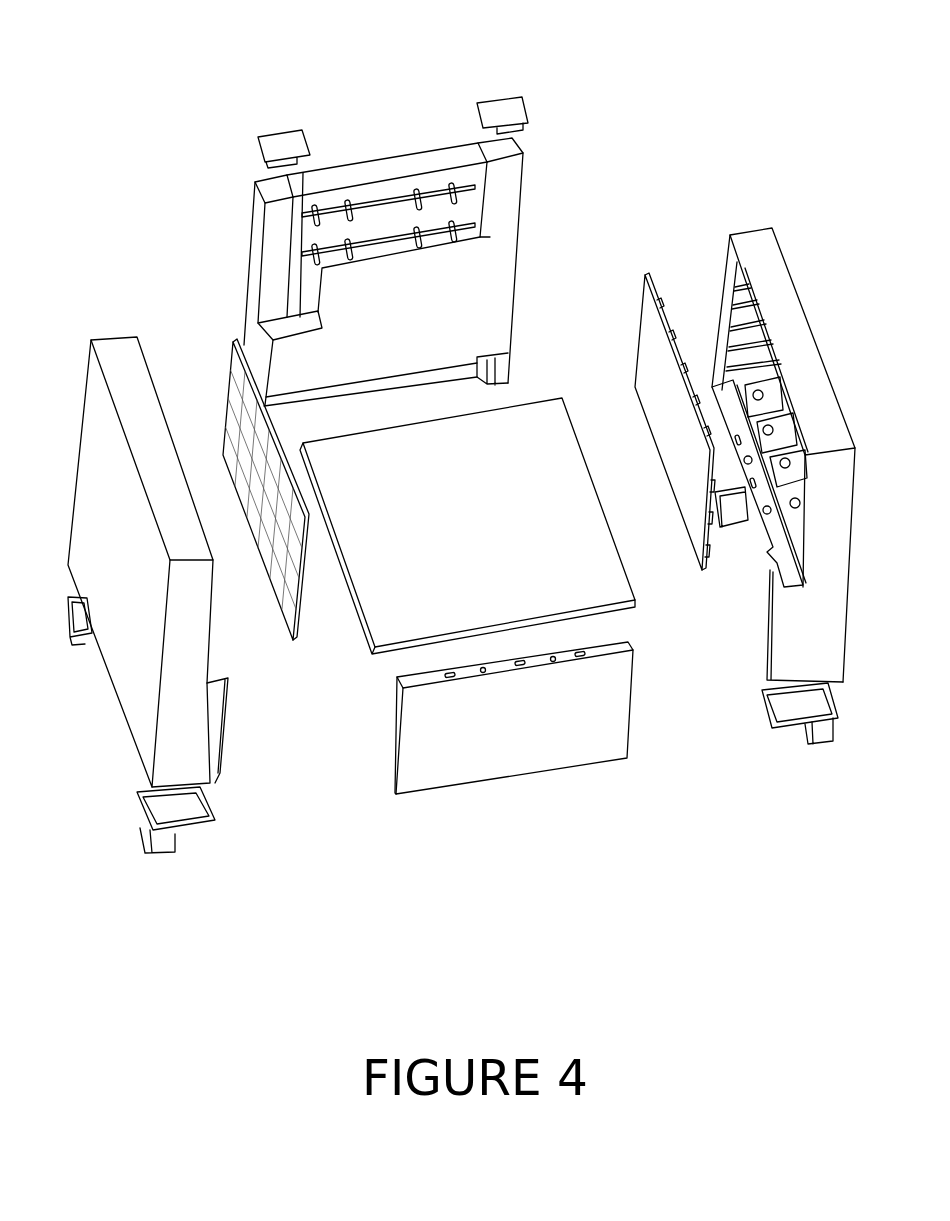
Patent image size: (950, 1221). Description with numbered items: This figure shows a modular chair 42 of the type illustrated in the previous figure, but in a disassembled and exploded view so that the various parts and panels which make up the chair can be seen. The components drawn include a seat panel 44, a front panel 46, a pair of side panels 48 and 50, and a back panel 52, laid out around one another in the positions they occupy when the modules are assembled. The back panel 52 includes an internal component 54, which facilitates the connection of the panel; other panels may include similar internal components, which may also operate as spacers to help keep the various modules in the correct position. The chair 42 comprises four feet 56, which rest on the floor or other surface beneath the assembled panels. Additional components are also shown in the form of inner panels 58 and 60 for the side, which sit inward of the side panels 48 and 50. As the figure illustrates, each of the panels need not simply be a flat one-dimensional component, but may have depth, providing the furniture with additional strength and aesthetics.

The chair 42 is at (160, 66).
The seat panel 44 is at (374, 660).
The front panel 46 is at (542, 762).
The side panel 48 is at (93, 417).
The side panel 50 is at (797, 318).
The back panel 52 is at (497, 295).
The internal component 54 is at (400, 192).
The feet 56 is at (67, 633).
The inner panel 58 is at (648, 374).
The inner panel 60 is at (283, 647).